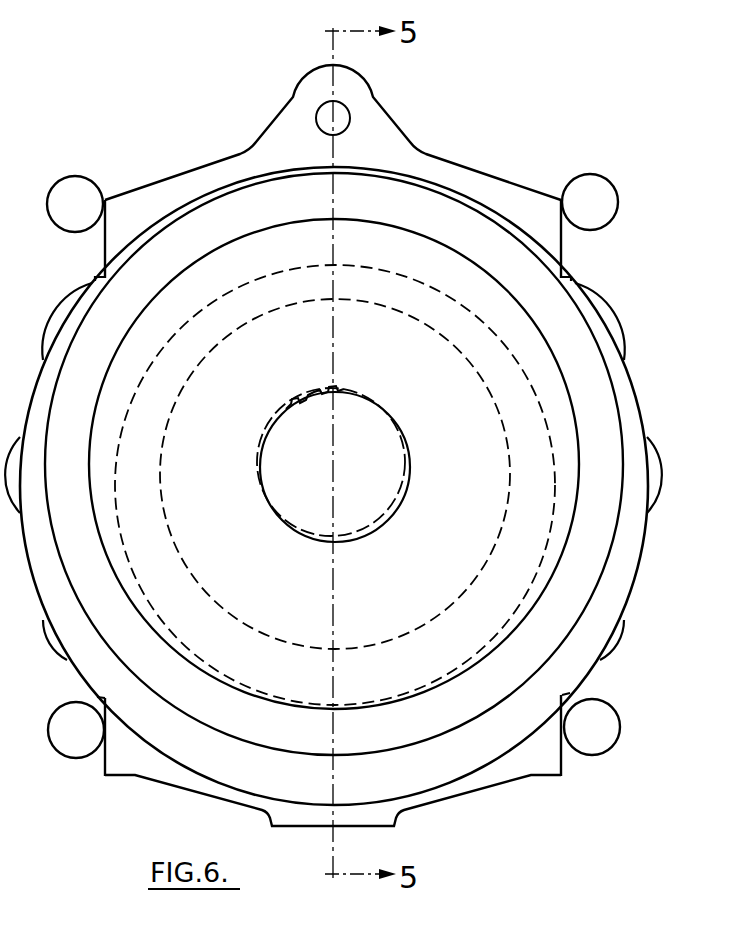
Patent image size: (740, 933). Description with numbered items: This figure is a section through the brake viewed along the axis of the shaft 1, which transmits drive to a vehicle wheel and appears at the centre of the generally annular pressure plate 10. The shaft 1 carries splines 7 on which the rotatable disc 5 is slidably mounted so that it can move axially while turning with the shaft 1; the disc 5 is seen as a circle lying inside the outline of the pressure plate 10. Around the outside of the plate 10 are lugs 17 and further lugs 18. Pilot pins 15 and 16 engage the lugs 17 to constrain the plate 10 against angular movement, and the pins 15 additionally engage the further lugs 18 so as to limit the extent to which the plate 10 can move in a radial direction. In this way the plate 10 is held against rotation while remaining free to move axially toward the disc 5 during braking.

The shaft 1 is at (363, 437).
The rotatable disc 5 is at (195, 423).
The splines 7 is at (290, 405).
The pressure plate 10 is at (468, 183).
The pilot pins 15 is at (80, 193).
The pilot pins 16 is at (63, 735).
The lugs 17 is at (115, 235).
The further lugs 18 is at (63, 310).